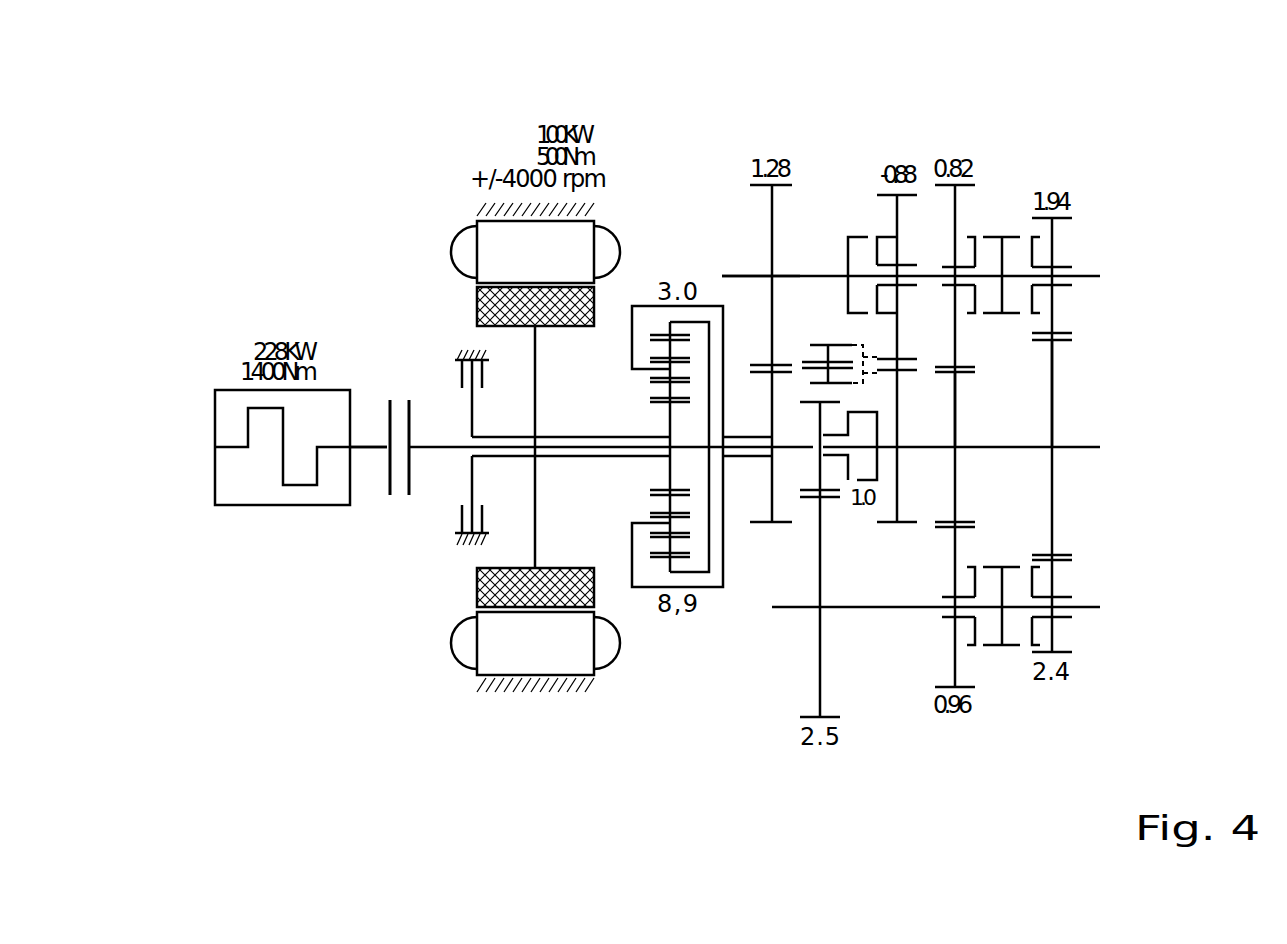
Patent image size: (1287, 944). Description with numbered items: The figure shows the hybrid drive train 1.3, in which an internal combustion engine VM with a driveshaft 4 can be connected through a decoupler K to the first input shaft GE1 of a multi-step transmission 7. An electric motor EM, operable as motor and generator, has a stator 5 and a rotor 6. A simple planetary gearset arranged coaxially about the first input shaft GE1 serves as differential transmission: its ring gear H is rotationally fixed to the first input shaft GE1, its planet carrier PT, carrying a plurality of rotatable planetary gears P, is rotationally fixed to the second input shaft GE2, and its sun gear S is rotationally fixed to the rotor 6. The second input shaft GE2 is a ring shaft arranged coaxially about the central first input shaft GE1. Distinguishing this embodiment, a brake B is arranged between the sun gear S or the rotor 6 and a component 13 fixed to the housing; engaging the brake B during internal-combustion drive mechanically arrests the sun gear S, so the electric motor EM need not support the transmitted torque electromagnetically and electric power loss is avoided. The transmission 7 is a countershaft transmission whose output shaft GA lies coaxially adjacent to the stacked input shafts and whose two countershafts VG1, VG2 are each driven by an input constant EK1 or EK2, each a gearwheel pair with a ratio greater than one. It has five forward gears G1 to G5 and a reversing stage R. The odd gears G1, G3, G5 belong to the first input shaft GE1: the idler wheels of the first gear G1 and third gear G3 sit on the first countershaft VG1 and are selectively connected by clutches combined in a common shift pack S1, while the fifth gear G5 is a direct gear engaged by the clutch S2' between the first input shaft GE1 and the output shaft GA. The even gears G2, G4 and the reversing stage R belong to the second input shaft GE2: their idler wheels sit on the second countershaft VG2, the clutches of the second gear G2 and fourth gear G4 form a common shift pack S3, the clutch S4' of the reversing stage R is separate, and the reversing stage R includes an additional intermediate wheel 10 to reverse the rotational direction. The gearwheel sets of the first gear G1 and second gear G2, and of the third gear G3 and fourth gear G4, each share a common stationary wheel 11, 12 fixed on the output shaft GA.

The internal combustion engine VM is at (252, 465).
The driveshaft 4 is at (373, 445).
The decoupler K is at (398, 503).
The first input shaft GE1 is at (458, 447).
The brake B is at (446, 360).
The component fixed to the housing 13 is at (460, 540).
The electric motor EM is at (493, 258).
The stator 5 is at (433, 243).
The rotor 6 is at (493, 305).
The hybrid drive train 1.3 is at (405, 617).
The planet carrier PT is at (632, 345).
The ring gear H is at (697, 583).
The sun gear S is at (670, 470).
The planetary gears P is at (665, 503).
The second input shaft GE2 is at (736, 457).
The second input constant EK2 is at (772, 143).
The multi-step transmission 7 is at (742, 243).
The second countershaft VG2 is at (1085, 276).
The intermediate wheel 10 is at (828, 345).
The clutch of the reversing stage S4' is at (859, 217).
The reversing stage R is at (897, 152).
The fourth gear G4 is at (955, 147).
The shift pack S3 is at (1003, 322).
The second gear G2 is at (1053, 178).
The common stationary wheel 11 is at (1052, 377).
The common stationary wheel 12 is at (955, 405).
The output shaft GA is at (1073, 448).
The shift pack S1 is at (1003, 555).
The first countershaft VG1 is at (1077, 607).
The first input constant EK1 is at (810, 633).
The fifth gear G5 is at (855, 520).
The clutch S2' is at (886, 618).
The third gear G3 is at (953, 722).
The first gear G1 is at (1050, 685).